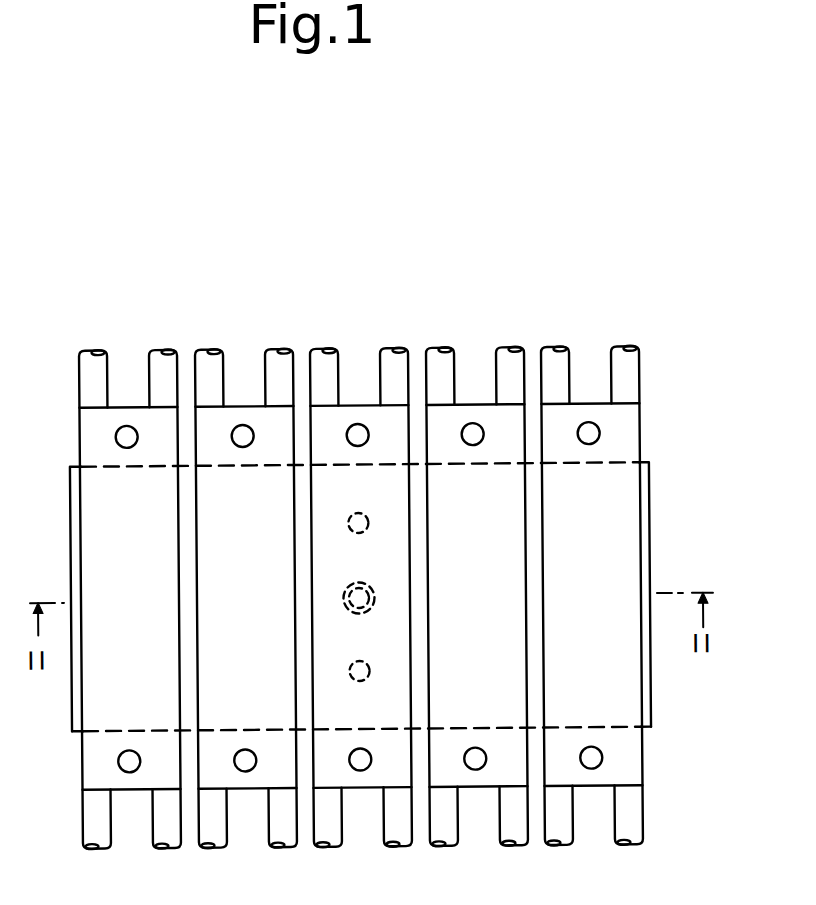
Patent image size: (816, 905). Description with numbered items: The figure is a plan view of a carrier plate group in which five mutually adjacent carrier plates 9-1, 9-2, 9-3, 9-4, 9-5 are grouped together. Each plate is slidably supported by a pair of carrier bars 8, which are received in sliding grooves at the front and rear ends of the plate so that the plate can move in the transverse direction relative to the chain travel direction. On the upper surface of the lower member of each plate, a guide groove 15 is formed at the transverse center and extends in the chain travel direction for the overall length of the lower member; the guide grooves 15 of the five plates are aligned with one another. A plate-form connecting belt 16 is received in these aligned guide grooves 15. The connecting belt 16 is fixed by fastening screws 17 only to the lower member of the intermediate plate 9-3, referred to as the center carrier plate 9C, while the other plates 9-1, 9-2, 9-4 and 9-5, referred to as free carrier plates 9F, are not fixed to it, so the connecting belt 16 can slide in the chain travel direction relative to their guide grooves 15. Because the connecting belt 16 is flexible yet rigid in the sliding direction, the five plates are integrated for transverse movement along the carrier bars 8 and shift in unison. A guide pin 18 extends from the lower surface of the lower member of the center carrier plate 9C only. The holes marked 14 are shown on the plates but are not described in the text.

The carrier bar 8 is at (641, 808).
The carrier plate 9-1 is at (625, 554).
The carrier plate 9-2 is at (474, 415).
The carrier plate 9-3 is at (393, 556).
The carrier plate 9-4 is at (245, 415).
The carrier plate 9-5 is at (129, 415).
The free carrier plate 9F is at (394, 556).
The center carrier plate 9C is at (393, 556).
The positioning hole 14 is at (601, 434).
The guide groove 15 is at (600, 727).
The connecting belt 16 is at (650, 522).
The fastening screw 17 is at (350, 522).
The guide pin 18 is at (368, 601).